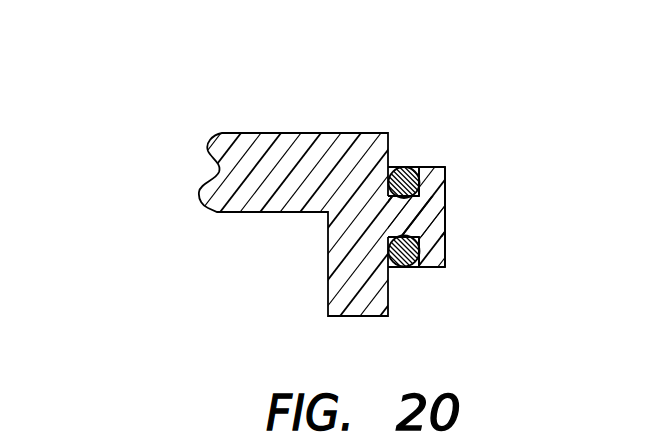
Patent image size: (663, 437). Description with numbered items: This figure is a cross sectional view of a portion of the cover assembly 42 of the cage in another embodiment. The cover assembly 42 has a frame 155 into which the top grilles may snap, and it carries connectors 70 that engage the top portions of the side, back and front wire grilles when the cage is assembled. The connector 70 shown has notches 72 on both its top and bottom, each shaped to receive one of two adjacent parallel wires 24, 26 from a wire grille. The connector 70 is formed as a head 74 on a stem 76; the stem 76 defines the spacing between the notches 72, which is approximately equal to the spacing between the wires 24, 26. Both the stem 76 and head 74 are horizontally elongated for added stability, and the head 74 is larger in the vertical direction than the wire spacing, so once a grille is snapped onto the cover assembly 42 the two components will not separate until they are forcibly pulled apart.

The frame 155 is at (242, 133).
The cover assembly 42 is at (260, 213).
The stem 76 is at (408, 215).
The notches 72 is at (397, 157).
The wire 24 is at (412, 168).
The wire 26 is at (412, 262).
The connector 70 is at (462, 196).
The head 74 is at (447, 247).